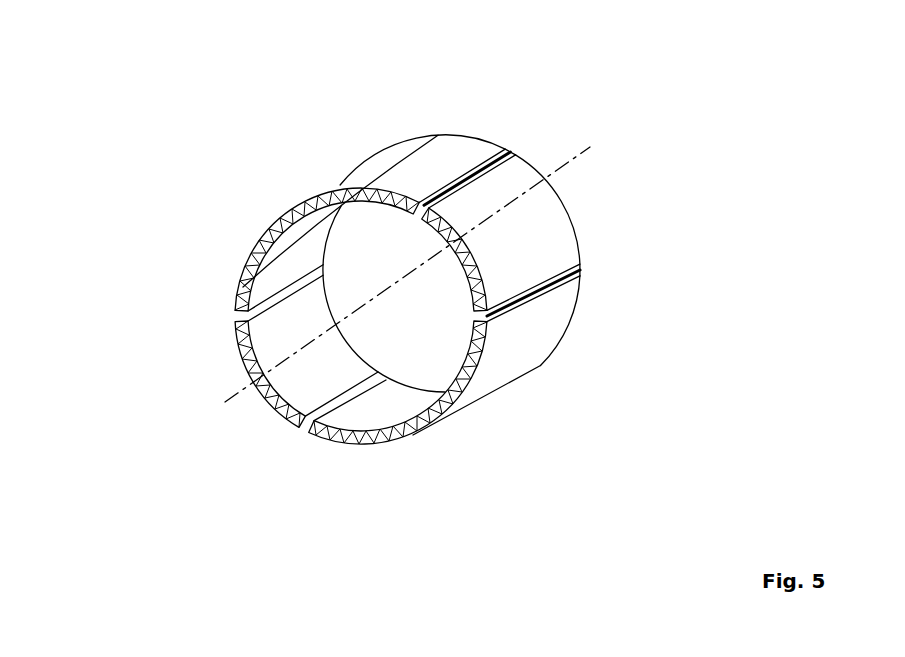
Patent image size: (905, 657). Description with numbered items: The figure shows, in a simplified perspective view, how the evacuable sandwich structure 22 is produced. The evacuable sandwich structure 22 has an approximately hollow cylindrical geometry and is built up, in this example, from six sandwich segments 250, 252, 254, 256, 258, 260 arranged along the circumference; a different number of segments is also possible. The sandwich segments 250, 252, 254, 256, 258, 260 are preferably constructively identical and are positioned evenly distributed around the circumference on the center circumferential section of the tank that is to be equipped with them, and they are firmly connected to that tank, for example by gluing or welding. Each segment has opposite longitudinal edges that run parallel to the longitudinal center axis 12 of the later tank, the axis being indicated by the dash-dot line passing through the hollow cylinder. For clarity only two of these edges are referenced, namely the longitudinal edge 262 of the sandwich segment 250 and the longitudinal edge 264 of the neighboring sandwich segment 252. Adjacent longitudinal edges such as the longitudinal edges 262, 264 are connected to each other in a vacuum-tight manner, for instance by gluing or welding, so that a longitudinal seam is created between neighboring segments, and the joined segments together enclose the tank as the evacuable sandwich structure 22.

The evacuable sandwich structure 22 is at (257, 140).
The longitudinal center axis 12 is at (225, 395).
The sandwich segment 250 is at (405, 171).
The sandwich segment 252 is at (532, 220).
The sandwich segment 254 is at (523, 343).
The sandwich segment 256 is at (370, 448).
The sandwich segment 258 is at (237, 357).
The sandwich segment 260 is at (270, 230).
The longitudinal edge 262 is at (478, 181).
The longitudinal edge 264 is at (497, 183).